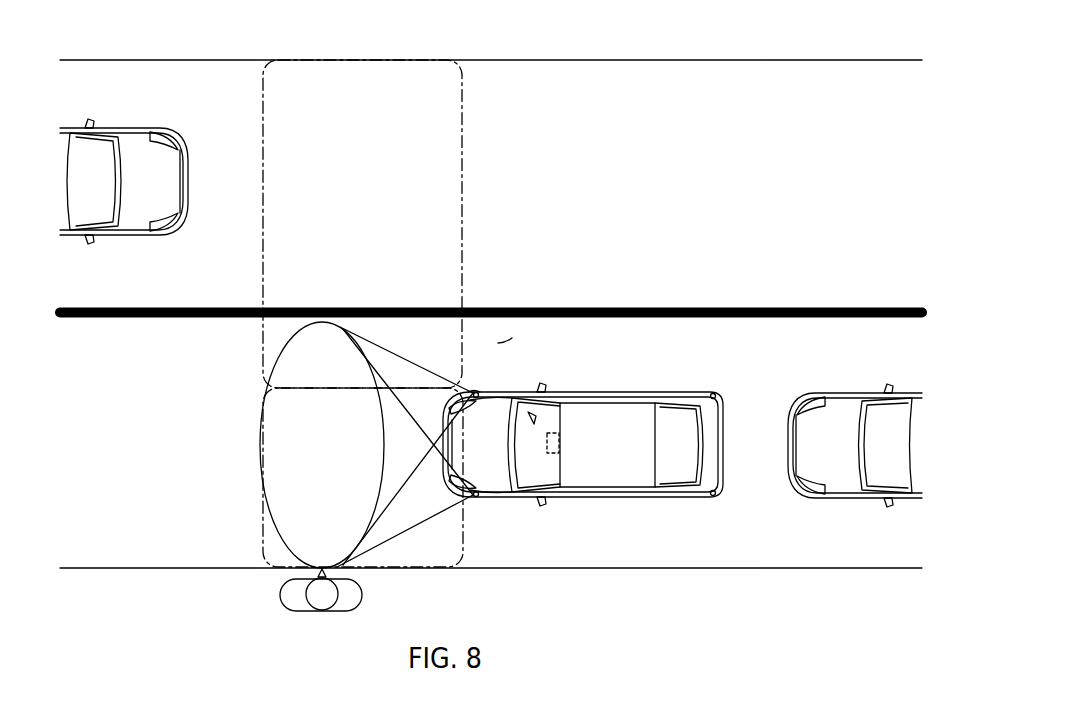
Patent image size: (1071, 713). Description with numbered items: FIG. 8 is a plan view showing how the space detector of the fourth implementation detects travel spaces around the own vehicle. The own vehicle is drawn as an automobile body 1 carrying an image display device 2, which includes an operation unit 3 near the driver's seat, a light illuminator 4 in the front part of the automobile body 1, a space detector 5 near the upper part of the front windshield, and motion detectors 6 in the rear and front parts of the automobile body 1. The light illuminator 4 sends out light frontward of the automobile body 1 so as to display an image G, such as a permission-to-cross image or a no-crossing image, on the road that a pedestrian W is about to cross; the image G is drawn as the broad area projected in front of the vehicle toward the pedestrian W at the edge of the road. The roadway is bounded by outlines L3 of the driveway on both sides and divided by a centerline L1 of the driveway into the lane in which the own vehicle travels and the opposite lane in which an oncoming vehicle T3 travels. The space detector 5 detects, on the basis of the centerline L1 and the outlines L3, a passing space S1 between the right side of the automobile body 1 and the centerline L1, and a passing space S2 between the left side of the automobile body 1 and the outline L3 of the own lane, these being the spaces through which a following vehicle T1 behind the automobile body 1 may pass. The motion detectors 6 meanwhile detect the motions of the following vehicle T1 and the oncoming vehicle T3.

The automobile body 1 is at (626, 491).
The image display device 2 is at (500, 344).
The operation unit 3 is at (533, 420).
The light illuminator 4 is at (474, 391).
The space detector 5 is at (552, 431).
The motion detector 6 is at (478, 393).
The image G is at (261, 433).
The passing space S1 is at (463, 178).
The passing space S2 is at (263, 535).
The pedestrian W is at (362, 597).
The centerline of the driveway L1 is at (76, 320).
The outline of the driveway L3 is at (82, 60).
The following vehicle T1 is at (845, 499).
The oncoming vehicle T3 is at (120, 128).